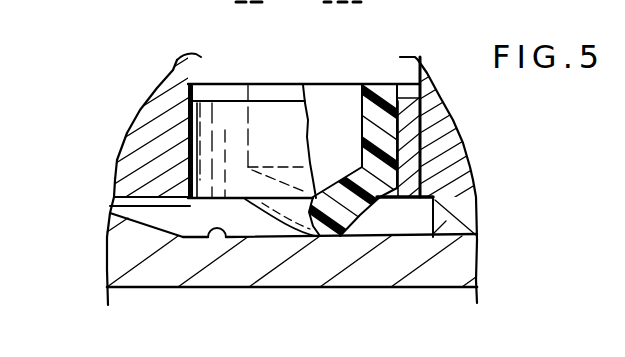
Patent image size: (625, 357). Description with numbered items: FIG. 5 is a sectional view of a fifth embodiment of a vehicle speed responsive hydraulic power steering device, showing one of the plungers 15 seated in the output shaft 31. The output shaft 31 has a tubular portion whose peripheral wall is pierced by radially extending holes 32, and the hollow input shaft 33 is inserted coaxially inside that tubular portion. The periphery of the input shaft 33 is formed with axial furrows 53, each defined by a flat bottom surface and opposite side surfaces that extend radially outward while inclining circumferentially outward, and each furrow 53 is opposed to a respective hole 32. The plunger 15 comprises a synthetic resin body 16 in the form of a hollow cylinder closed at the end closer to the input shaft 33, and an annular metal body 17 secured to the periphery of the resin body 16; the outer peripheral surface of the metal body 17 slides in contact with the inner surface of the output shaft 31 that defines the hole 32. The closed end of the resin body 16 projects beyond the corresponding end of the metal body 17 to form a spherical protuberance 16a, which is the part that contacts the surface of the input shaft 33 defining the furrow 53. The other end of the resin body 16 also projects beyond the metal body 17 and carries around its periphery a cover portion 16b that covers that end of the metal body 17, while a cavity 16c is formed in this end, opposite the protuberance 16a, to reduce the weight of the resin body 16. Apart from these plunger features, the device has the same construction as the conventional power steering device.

The plunger 15 is at (115, 207).
The synthetic resin body 16 is at (200, 95).
The spherical protuberance 16a is at (320, 232).
The cover portion 16b is at (402, 83).
The cavity 16c is at (362, 107).
The annular metal body 17 is at (413, 162).
The output shaft 31 is at (140, 137).
The hole 32 is at (223, 54).
The input shaft 33 is at (147, 267).
The furrow 53 is at (228, 238).